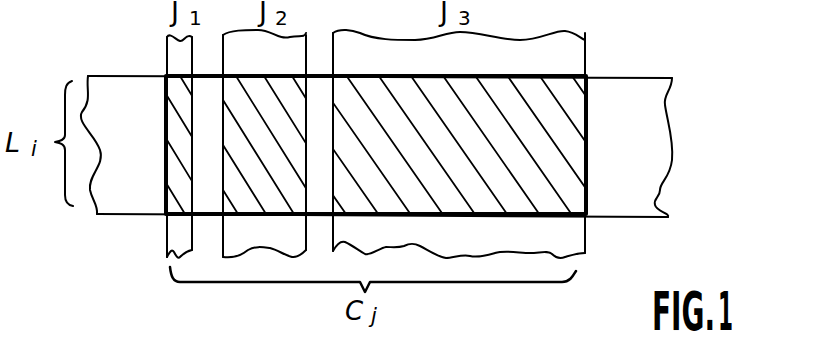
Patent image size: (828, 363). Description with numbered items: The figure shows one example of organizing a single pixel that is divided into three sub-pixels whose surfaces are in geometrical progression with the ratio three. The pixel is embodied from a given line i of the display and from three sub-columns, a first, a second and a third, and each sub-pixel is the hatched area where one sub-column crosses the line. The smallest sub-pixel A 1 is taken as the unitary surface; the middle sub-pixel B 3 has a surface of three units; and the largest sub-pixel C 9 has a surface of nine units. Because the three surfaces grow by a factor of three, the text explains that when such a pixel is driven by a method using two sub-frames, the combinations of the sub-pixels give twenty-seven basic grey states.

The sub-pixel A 1 is at (100, 42).
The sub-pixel B 3 is at (125, 248).
The sub-pixel C 9 is at (638, 43).